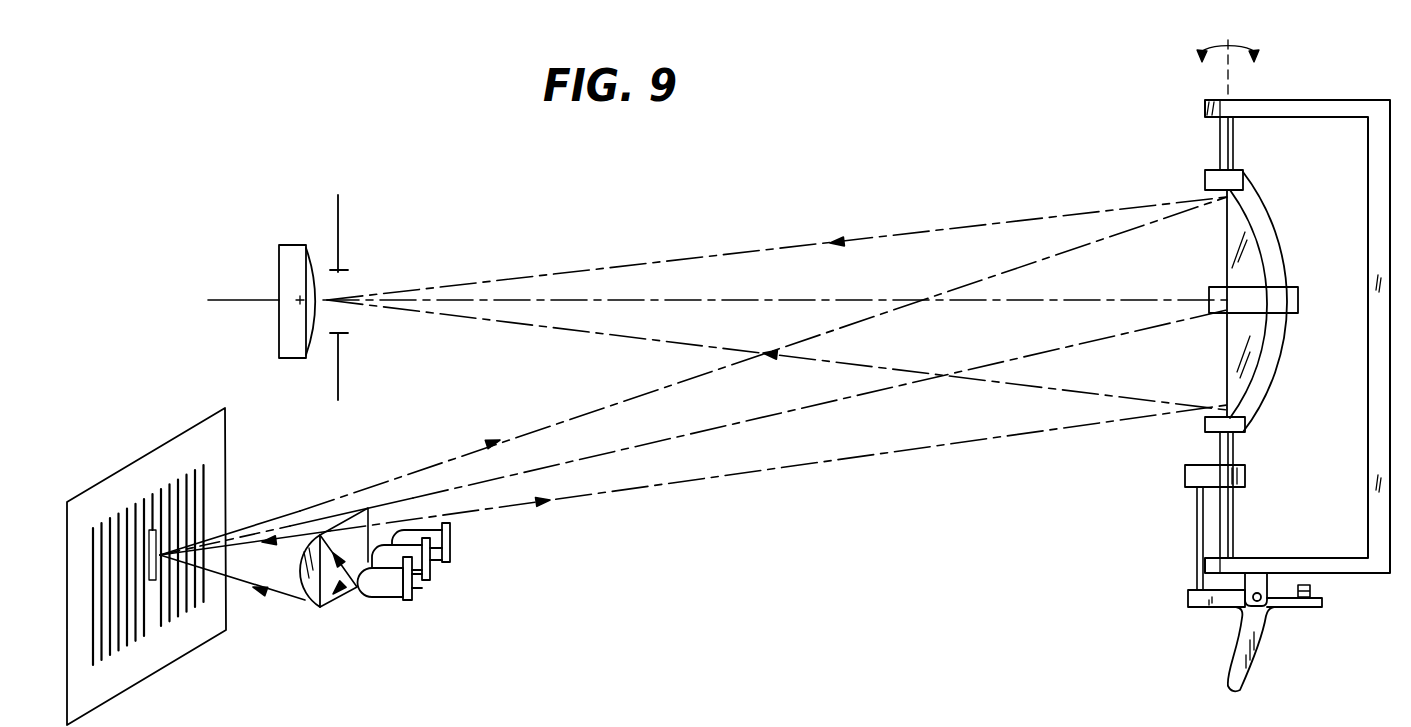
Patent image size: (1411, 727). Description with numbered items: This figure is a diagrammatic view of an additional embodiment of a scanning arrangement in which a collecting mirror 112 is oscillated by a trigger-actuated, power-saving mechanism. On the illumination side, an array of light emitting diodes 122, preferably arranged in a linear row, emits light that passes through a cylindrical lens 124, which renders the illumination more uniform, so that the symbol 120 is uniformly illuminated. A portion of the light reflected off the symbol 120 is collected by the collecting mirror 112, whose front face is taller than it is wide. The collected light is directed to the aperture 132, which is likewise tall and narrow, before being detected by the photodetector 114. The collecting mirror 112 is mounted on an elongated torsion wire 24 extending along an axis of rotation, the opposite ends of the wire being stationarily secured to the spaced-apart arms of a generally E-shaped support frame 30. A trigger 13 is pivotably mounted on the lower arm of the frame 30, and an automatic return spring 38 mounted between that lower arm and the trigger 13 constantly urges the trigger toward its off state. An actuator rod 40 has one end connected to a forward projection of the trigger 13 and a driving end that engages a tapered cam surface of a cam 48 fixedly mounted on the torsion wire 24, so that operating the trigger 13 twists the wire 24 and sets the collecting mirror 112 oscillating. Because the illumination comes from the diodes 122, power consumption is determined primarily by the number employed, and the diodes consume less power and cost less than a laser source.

The trigger 13 is at (1212, 653).
The torsion wire 24 is at (1237, 530).
The support frame 30 is at (1369, 580).
The automatic return spring 38 is at (1318, 596).
The actuator rod 40 is at (1185, 547).
The cam 48 is at (1258, 459).
The collecting mirror 112 is at (1212, 257).
The photodetector 114 is at (297, 233).
The symbol 120 is at (183, 647).
The array of light emitting diodes 122 is at (490, 537).
The cylindrical lens 124 is at (338, 604).
The aperture 132 is at (333, 272).